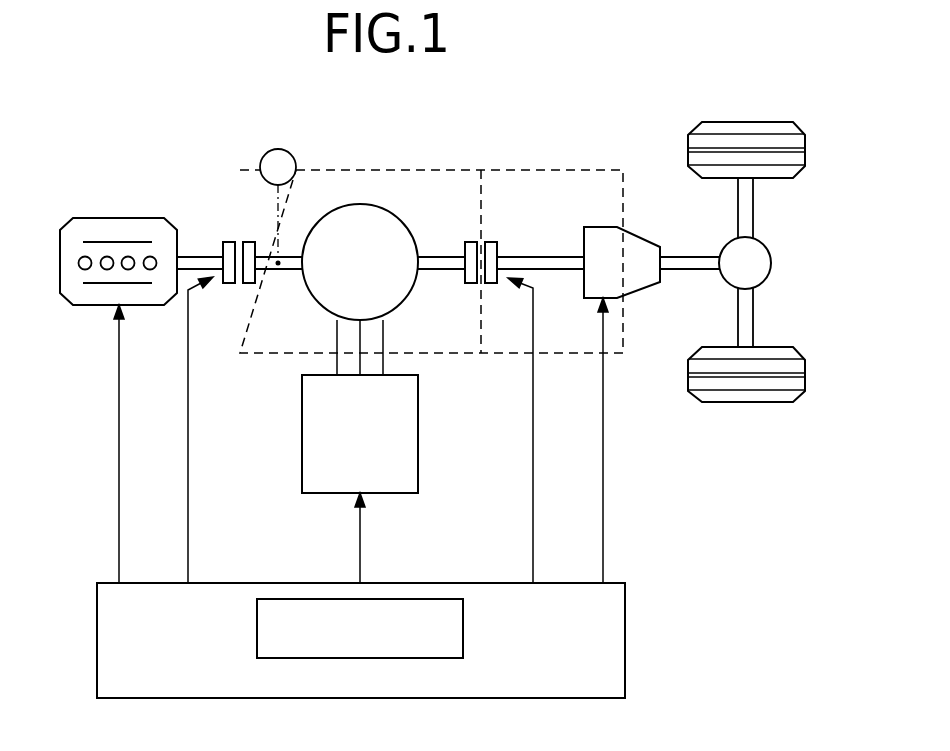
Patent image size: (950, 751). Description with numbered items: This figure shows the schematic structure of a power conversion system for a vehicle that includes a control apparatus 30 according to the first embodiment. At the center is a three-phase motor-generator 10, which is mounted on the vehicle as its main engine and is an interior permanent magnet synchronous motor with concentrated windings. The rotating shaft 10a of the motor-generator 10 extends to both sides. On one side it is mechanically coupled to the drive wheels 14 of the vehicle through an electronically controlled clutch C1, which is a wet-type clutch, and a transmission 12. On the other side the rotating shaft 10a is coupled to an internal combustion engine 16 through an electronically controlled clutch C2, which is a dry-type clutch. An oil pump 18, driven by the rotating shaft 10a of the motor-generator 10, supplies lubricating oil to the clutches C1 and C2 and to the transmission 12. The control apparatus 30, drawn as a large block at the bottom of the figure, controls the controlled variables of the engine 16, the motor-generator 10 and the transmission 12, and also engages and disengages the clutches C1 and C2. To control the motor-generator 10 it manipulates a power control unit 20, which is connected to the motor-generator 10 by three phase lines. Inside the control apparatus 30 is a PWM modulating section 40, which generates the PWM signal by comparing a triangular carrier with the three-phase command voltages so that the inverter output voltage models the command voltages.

The motor-generator 10 is at (356, 204).
The rotating shaft 10a is at (278, 270).
The transmission 12 is at (636, 236).
The drive wheels 14 is at (688, 141).
The internal combustion engine 16 is at (97, 218).
The oil pump 18 is at (278, 149).
The power control unit 20 is at (400, 495).
The control apparatus 30 is at (625, 638).
The PWM modulating section 40 is at (463, 627).
The clutch C1 is at (496, 232).
The clutch C2 is at (220, 232).